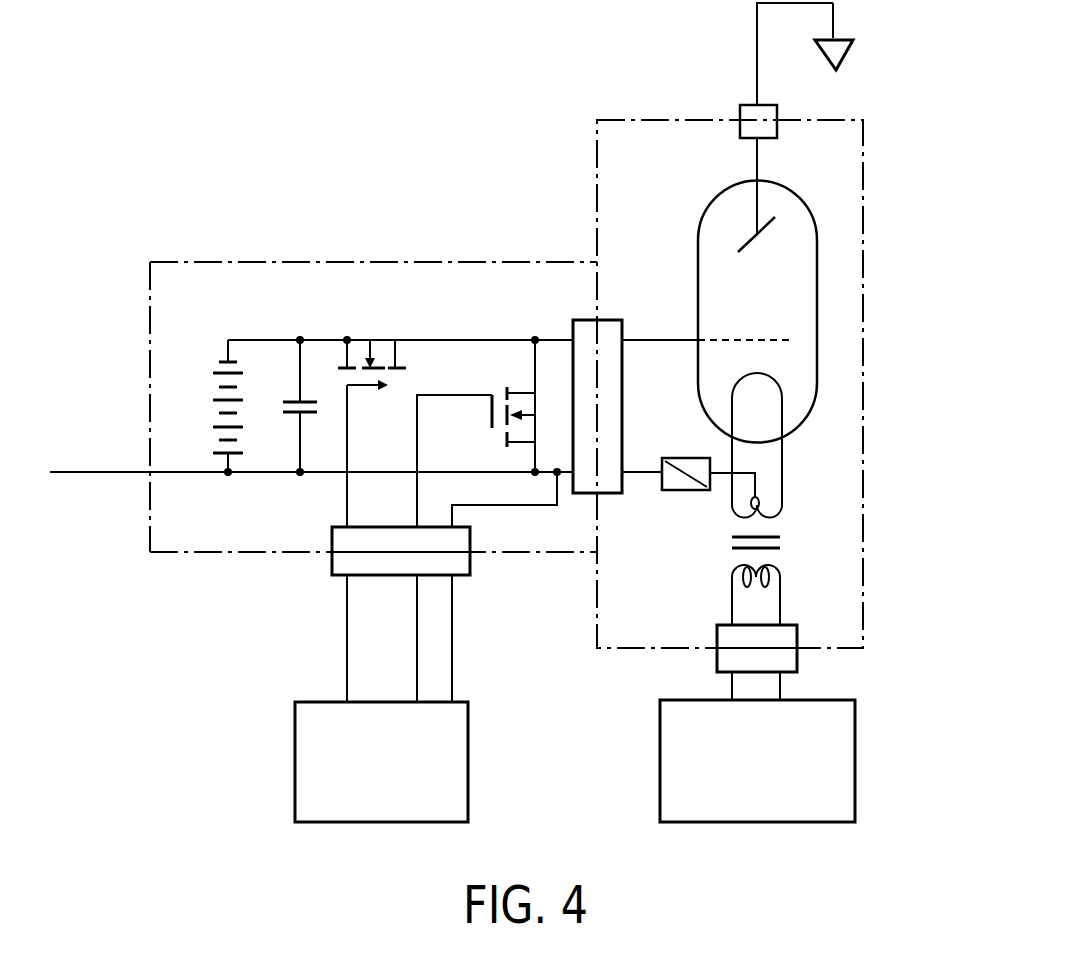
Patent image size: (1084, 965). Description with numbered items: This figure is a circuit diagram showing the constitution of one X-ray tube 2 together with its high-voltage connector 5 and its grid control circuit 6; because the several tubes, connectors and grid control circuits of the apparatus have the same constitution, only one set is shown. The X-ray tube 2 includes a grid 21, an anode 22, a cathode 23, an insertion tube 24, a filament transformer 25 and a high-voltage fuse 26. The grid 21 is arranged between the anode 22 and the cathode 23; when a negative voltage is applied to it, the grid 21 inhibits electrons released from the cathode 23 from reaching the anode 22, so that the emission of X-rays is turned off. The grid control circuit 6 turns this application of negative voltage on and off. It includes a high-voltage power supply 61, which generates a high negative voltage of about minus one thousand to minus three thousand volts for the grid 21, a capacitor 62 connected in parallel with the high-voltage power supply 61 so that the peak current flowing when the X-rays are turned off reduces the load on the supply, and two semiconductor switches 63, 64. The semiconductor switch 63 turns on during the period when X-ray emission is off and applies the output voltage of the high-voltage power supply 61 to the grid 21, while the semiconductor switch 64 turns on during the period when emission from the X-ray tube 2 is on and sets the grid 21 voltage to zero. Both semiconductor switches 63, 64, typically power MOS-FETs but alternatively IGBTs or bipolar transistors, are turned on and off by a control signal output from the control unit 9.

The X-ray tube 2 is at (862, 150).
The high-voltage connector 5 is at (196, 553).
The grid control circuit 6 is at (855, 762).
The control unit 9 is at (468, 760).
The grid 21 is at (770, 340).
The anode 22 is at (766, 232).
The cathode 23 is at (782, 388).
The insertion tube 24 is at (816, 222).
The filament transformer 25 is at (782, 545).
The high-voltage fuse 26 is at (676, 492).
The high-voltage power supply 61 is at (212, 360).
The capacitor 62 is at (278, 418).
The semiconductor switch 63 is at (382, 345).
The semiconductor switch 64 is at (513, 380).